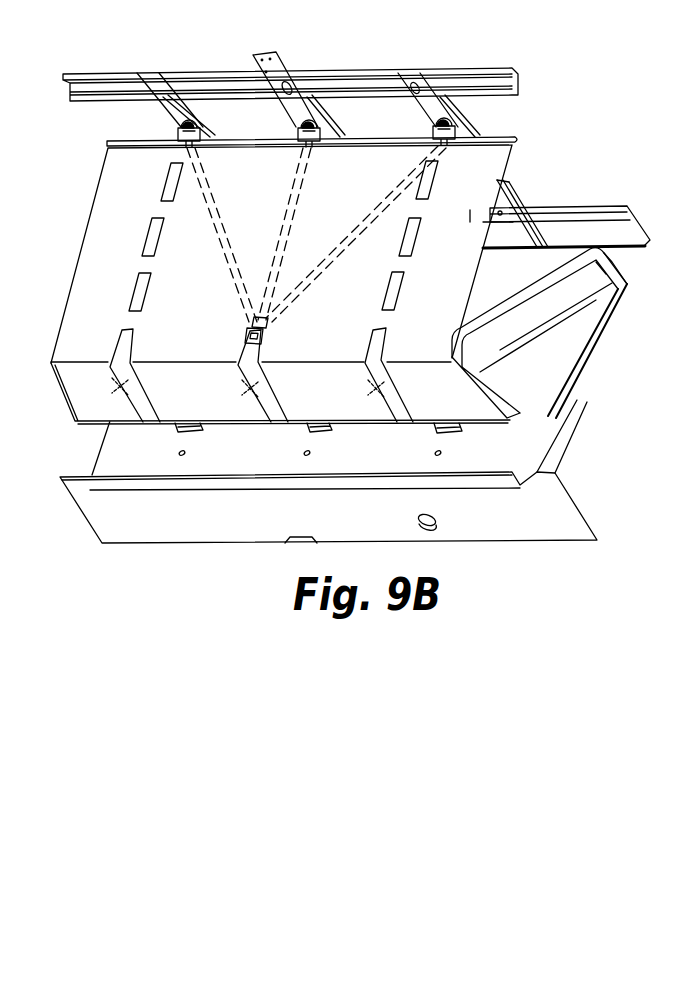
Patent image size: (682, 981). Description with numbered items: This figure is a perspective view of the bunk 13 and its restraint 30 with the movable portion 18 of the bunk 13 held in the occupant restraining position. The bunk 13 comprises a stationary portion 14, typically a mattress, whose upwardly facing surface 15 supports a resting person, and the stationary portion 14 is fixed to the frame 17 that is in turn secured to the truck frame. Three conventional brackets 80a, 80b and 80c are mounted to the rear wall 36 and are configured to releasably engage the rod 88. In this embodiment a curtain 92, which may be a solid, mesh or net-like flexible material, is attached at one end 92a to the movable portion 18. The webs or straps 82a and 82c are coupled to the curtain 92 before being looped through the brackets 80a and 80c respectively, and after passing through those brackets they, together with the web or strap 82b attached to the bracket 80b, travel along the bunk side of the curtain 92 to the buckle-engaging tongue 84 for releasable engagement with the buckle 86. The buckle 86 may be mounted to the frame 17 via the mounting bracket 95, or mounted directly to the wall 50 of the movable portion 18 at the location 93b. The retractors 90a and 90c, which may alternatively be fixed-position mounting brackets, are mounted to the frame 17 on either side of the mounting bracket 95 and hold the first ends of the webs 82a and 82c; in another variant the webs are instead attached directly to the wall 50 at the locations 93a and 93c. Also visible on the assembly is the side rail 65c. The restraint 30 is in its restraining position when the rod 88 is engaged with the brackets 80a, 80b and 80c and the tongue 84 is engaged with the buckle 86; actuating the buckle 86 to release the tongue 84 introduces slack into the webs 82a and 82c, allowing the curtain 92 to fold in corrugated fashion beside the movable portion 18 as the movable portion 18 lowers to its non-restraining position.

The restraint 30 is at (355, 288).
The rear wall 36 is at (282, 58).
The rod 88 is at (507, 134).
The bracket 80a is at (180, 134).
The bracket 80b is at (305, 136).
The bracket 80c is at (440, 136).
The web or strap 82a is at (134, 288).
The web or strap 82b is at (283, 226).
The web or strap 82c is at (404, 290).
The buckle-engaging tongue 84 is at (267, 323).
The buckle 86 is at (246, 330).
The curtain 92 is at (76, 272).
The end of curtain 92a is at (147, 362).
The attachment location 93a is at (126, 388).
The attachment location 93b is at (245, 390).
The attachment location 93c is at (373, 388).
The retractor 90a is at (185, 433).
The retractor 90c is at (455, 432).
The mounting bracket 95 is at (327, 433).
The wall 50 is at (90, 416).
The side rail 65c is at (510, 212).
The bunk 13 is at (563, 345).
The stationary portion 14 is at (575, 337).
The upwardly facing surface 15 is at (627, 288).
The movable portion 18 is at (570, 397).
The frame 17 is at (556, 452).